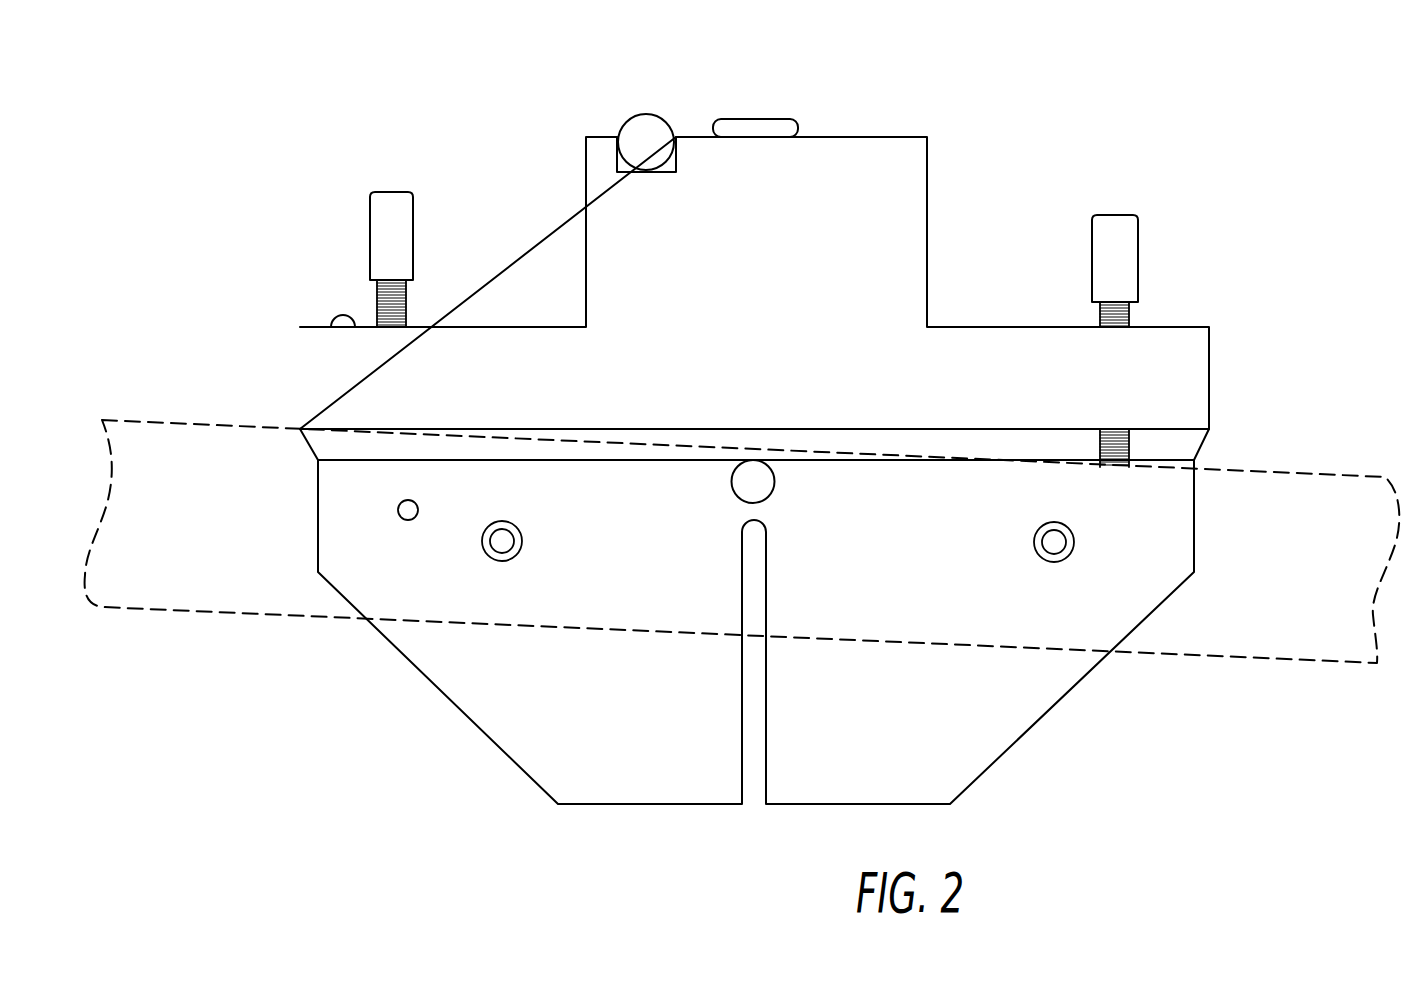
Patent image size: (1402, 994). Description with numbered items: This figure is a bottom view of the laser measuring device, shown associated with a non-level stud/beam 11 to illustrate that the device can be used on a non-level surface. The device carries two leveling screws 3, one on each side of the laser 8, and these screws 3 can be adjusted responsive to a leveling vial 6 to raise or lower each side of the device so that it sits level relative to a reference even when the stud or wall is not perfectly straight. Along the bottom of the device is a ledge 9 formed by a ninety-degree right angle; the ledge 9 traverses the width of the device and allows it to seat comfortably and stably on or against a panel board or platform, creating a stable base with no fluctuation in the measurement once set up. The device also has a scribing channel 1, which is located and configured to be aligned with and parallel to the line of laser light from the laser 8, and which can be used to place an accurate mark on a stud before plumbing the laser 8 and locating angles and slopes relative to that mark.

The scribing channel 1 is at (757, 808).
The leveling screws 3 is at (373, 295).
The leveling vial 6 is at (646, 115).
The laser 8 is at (735, 119).
The ledge 9 is at (309, 447).
The non-level stud/beam 11 is at (173, 420).